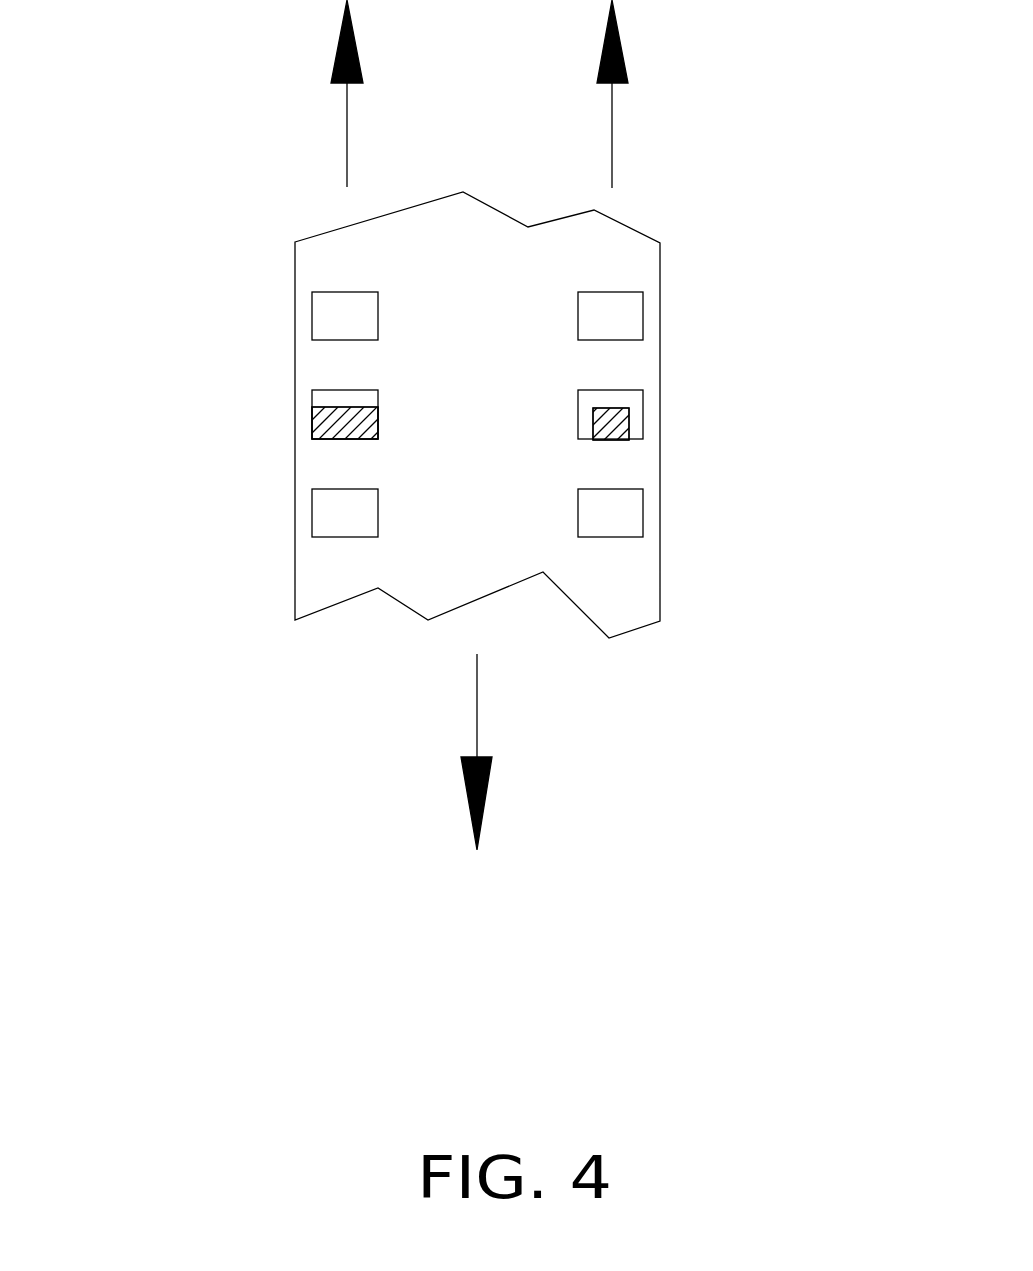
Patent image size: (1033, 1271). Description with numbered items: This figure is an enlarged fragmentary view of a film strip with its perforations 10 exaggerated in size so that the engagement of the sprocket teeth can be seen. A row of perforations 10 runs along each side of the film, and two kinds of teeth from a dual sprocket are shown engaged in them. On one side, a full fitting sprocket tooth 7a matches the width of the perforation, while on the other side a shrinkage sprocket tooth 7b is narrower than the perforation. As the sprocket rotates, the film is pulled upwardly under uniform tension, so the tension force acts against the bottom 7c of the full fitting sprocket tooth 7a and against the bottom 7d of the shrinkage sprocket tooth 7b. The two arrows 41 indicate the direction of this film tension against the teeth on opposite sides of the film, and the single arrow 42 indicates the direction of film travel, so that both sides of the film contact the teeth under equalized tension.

The perforations 10 is at (312, 308).
The full fitting sprocket teeth 7a is at (332, 407).
The shrinkage sprocket teeth 7b is at (607, 408).
The bottom of the full fitting sprocket teeth 7c is at (337, 439).
The bottom of the shrinkage sprocket teeth 7d is at (607, 442).
The arrows 41 is at (347, 140).
The arrow 42 is at (477, 687).